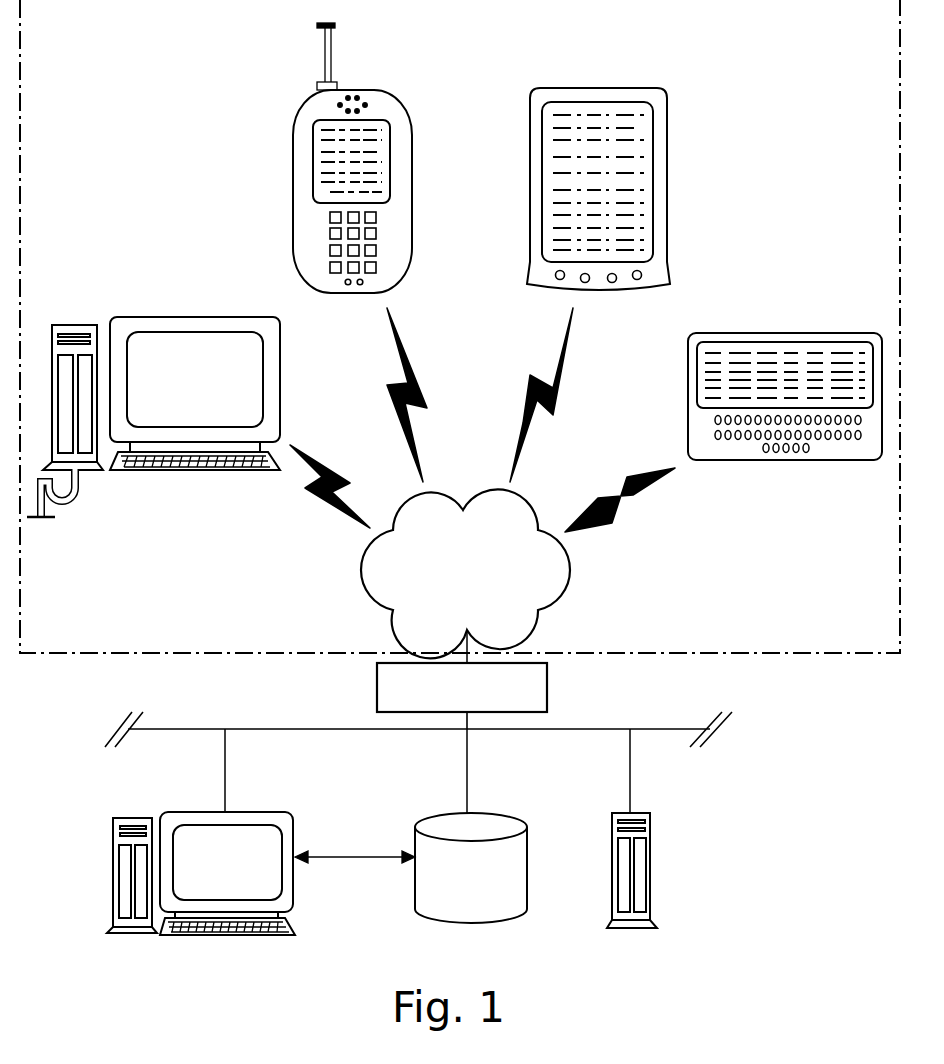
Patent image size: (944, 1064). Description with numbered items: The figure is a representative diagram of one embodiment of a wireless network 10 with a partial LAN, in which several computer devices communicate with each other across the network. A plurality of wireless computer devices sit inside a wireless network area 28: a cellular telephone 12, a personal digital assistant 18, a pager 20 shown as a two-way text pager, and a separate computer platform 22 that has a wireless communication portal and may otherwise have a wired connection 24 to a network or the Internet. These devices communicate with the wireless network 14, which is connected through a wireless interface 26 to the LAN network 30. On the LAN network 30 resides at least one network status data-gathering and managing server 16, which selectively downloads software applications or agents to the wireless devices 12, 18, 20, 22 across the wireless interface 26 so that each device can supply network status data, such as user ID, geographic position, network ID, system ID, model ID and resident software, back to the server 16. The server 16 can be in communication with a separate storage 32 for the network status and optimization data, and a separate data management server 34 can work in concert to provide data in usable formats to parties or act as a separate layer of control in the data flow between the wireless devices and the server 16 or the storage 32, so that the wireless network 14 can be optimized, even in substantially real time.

The wireless network 10 is at (787, 167).
The cellular telephone 12 is at (393, 90).
The wireless network 14 is at (567, 567).
The network status data-gathering and managing server 16 is at (200, 812).
The personal digital assistant 18 is at (600, 88).
The pager 20 is at (818, 460).
The computer platform 22 is at (186, 317).
The wired connection 24 is at (91, 507).
The wireless interface 26 is at (547, 688).
The wireless network area 28 is at (765, 653).
The LAN network 30 is at (253, 729).
The storage 32 is at (415, 866).
The data management server 34 is at (650, 846).